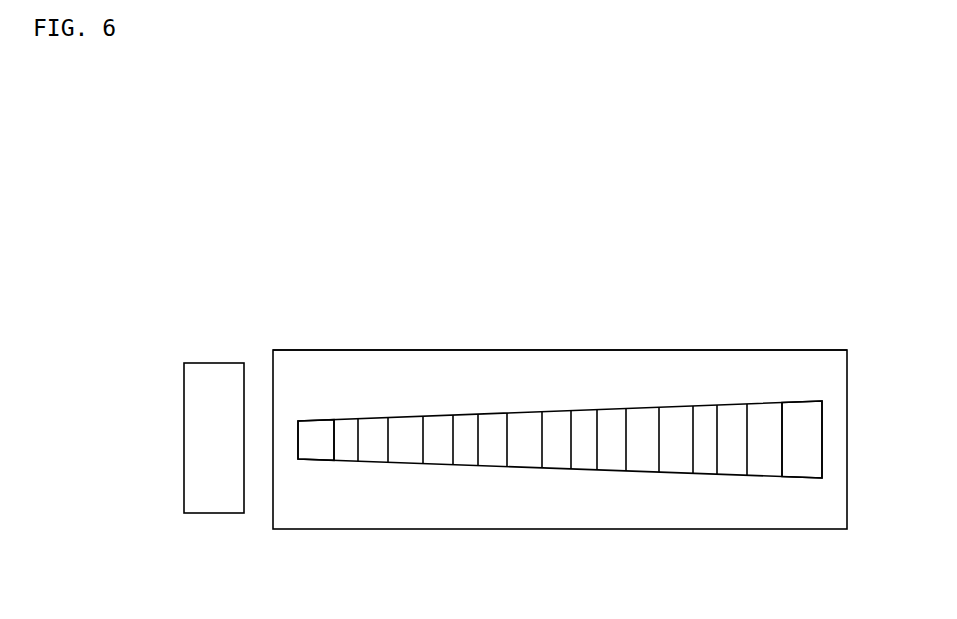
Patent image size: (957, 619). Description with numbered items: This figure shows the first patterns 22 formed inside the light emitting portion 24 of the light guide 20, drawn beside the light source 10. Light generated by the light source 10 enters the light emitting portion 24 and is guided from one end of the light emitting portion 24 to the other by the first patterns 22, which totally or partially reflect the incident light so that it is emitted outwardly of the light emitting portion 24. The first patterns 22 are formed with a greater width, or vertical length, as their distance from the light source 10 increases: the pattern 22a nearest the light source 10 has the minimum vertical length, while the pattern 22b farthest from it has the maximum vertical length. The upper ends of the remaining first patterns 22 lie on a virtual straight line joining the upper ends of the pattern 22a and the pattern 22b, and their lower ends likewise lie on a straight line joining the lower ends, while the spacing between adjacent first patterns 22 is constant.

The light source 10 is at (213, 362).
The light guide 20 is at (580, 336).
The first patterns 22 is at (557, 473).
The pattern having the minimum vertical length 22a is at (335, 442).
The pattern having the maximum vertical length 22b is at (782, 442).
The light emitting portion 24 is at (481, 374).